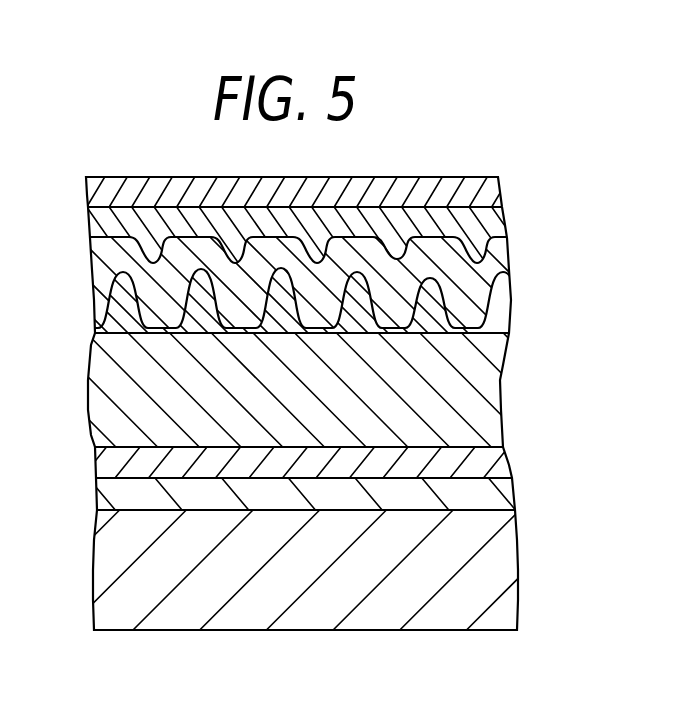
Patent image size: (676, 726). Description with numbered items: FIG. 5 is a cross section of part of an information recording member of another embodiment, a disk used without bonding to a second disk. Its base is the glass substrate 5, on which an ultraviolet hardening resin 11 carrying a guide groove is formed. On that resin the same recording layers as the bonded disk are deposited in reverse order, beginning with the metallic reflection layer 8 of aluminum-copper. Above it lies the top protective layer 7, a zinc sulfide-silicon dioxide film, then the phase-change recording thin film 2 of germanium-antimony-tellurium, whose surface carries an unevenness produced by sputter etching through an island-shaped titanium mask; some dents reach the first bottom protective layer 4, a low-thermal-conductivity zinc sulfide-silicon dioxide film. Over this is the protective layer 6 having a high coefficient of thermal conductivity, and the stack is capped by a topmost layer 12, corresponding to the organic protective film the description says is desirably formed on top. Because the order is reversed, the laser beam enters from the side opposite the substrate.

The protective layer 12 is at (493, 194).
The protective layer 6 is at (497, 221).
The first bottom protective layer 4 is at (498, 258).
The recording thin film 2 is at (500, 305).
The top protective layer 7 is at (491, 379).
The metallic reflection layer 8 is at (497, 463).
The ultraviolet hardening resin 11 is at (499, 496).
The glass substrate 5 is at (502, 560).